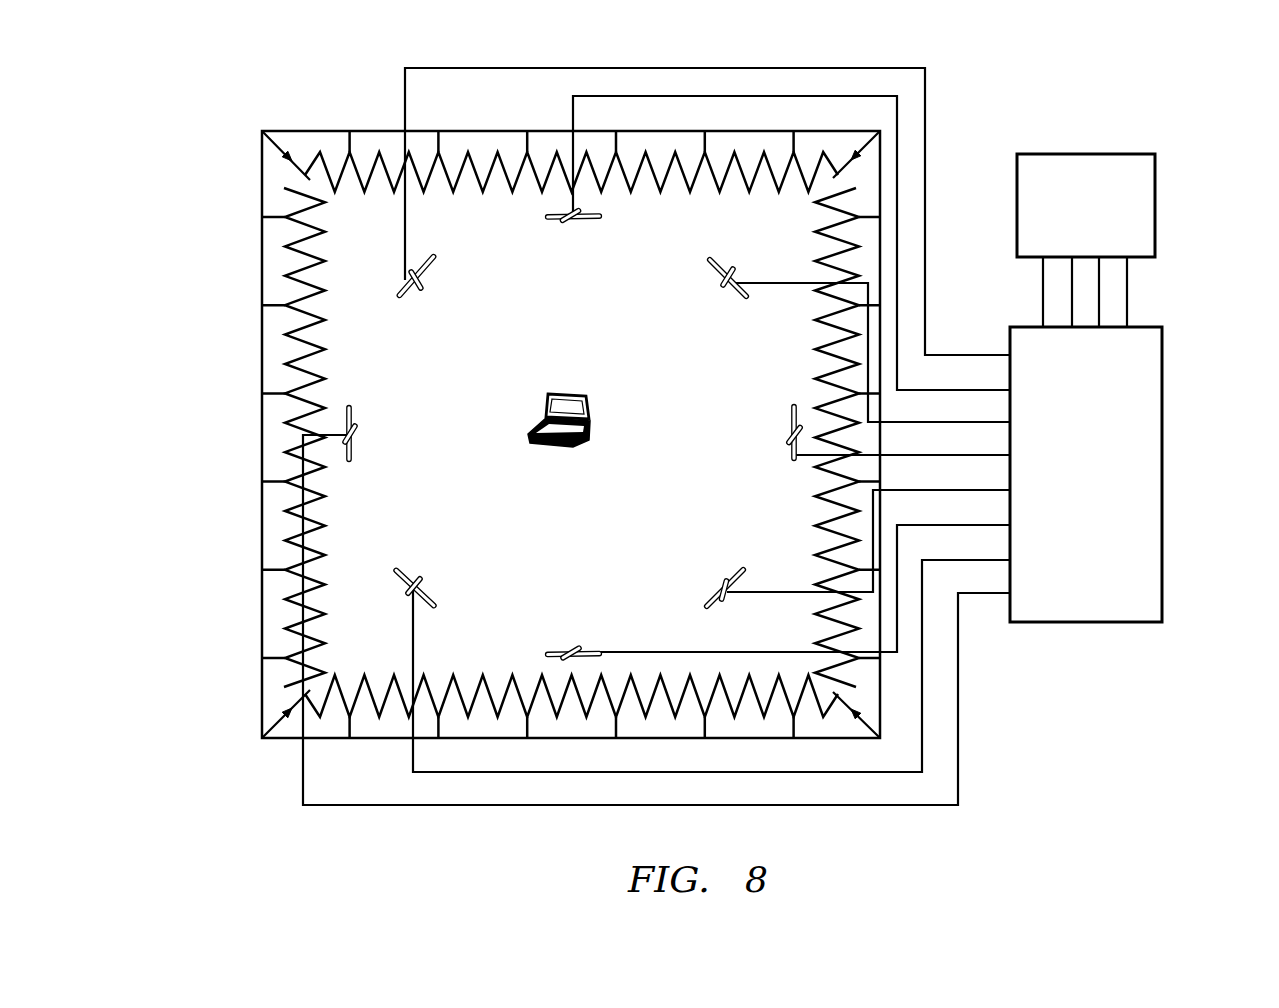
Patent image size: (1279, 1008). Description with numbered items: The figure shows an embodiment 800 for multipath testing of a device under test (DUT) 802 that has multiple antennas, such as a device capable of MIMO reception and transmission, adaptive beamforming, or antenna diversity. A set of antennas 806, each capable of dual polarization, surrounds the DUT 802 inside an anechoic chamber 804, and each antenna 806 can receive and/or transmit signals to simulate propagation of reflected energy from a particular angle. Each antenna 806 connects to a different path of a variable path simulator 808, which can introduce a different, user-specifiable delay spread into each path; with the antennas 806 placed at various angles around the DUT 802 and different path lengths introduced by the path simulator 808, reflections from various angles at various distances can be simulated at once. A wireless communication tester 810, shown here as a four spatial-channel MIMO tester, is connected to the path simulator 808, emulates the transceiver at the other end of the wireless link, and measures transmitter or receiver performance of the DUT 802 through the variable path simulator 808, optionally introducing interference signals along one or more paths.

The embodiment for multipath testing 800 is at (1141, 67).
The device under test (DUT) 802 is at (588, 415).
The anechoic chamber 804 is at (262, 291).
The antennas 806 is at (424, 270).
The variable path simulator 808 is at (1165, 362).
The wireless communication tester 810 is at (1157, 207).